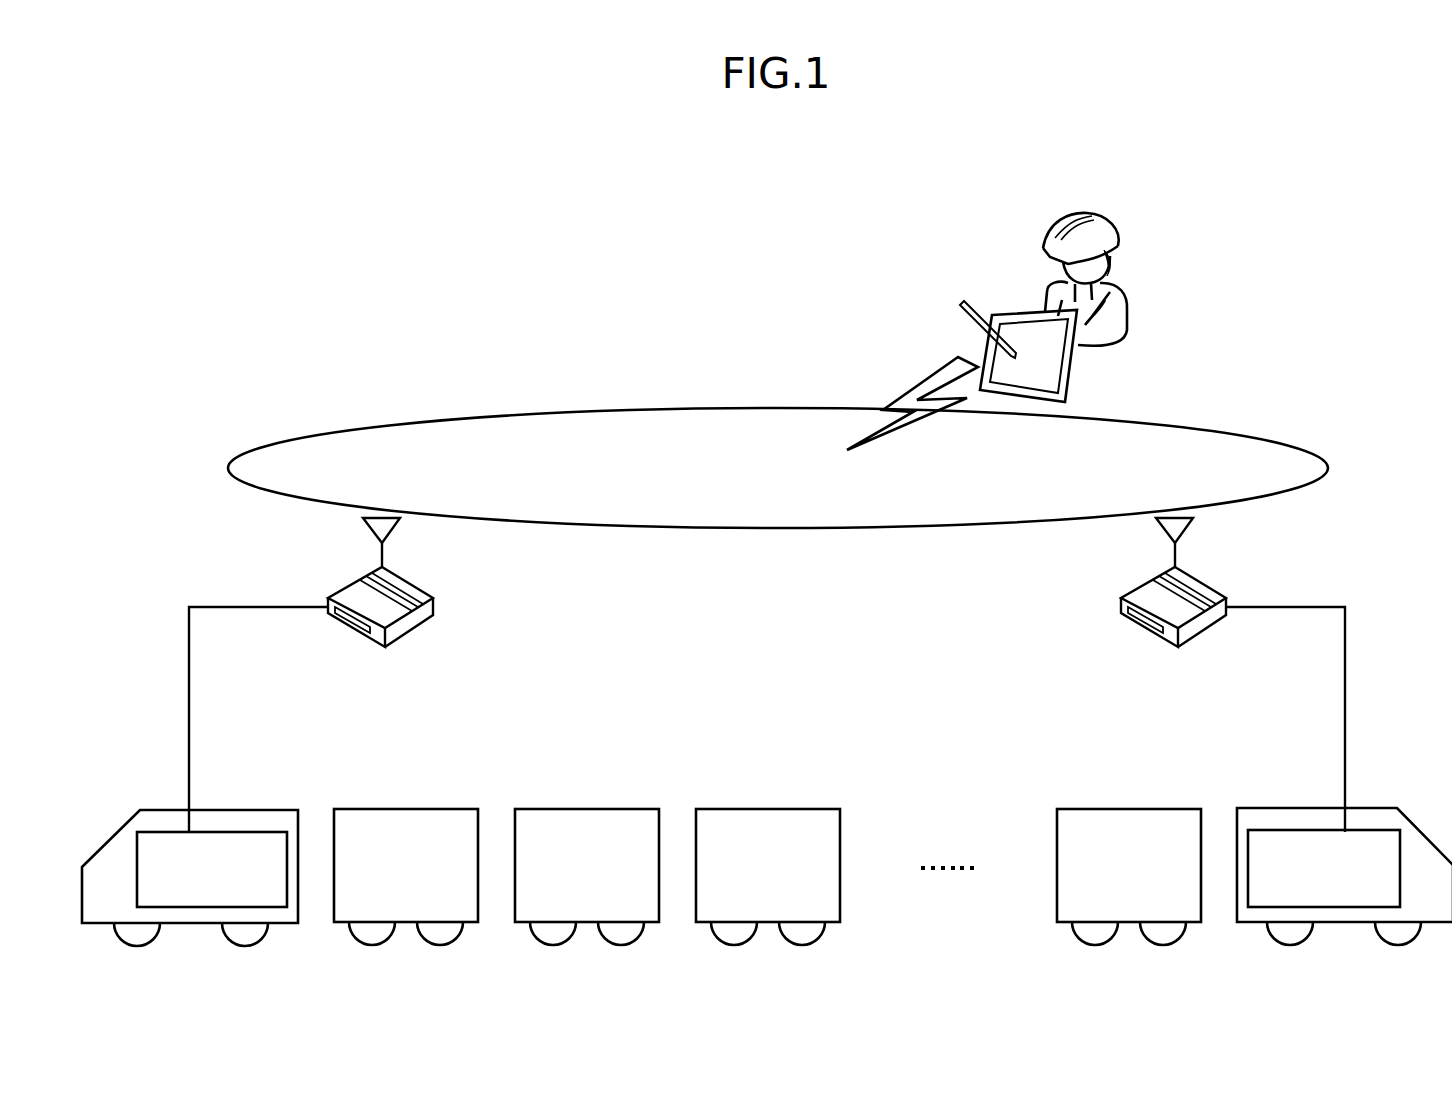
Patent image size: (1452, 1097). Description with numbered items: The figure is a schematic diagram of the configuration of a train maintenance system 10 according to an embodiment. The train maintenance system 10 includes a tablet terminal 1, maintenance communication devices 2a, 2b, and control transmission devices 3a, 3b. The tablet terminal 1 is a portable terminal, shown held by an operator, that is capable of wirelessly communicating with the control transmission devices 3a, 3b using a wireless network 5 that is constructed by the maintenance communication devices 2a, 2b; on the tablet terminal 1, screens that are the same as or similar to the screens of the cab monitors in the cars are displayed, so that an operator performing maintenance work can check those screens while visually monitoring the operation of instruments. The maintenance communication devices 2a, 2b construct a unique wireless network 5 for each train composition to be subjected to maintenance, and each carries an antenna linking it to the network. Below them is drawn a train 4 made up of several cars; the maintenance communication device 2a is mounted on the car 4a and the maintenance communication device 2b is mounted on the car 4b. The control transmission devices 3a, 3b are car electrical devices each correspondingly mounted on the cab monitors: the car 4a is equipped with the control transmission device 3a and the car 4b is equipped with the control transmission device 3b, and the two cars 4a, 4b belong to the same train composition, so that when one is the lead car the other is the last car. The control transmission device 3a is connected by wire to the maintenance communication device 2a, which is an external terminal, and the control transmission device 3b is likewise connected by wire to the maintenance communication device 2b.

The train maintenance system 10 is at (1168, 161).
The tablet terminal 1 is at (1077, 372).
The wireless network 5 is at (712, 407).
The maintenance communication device 2a is at (433, 610).
The maintenance communication device 2b is at (1121, 605).
The control transmission device 3a is at (237, 831).
The control transmission device 3b is at (1300, 829).
The train 4 is at (1412, 753).
The car 4a is at (195, 853).
The car 4b is at (1344, 853).